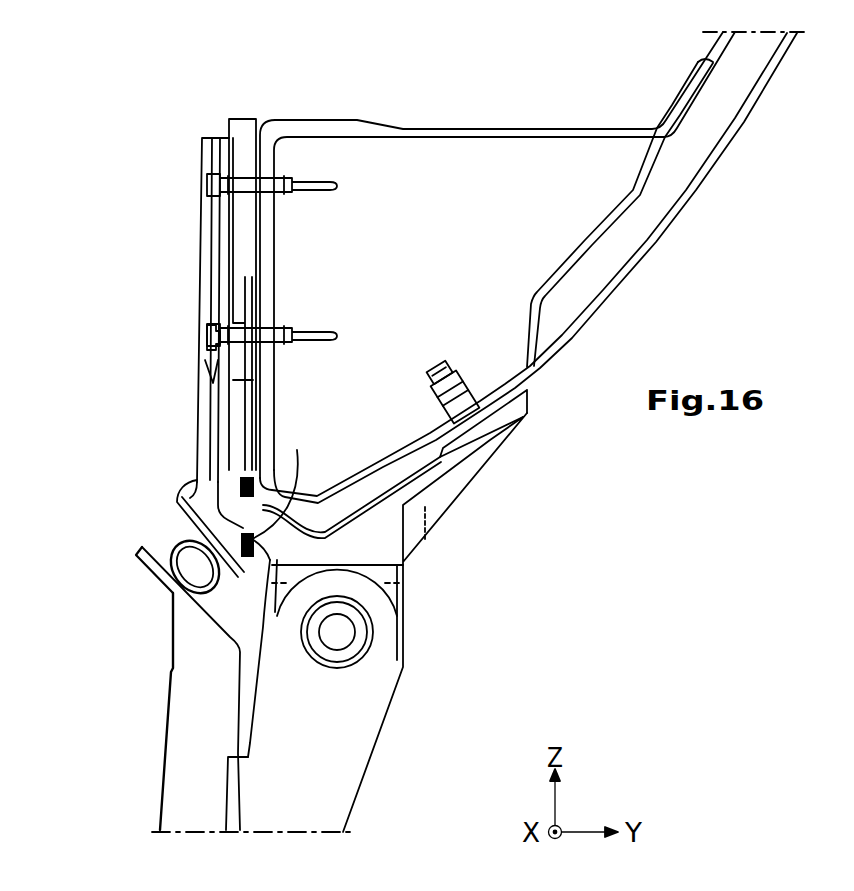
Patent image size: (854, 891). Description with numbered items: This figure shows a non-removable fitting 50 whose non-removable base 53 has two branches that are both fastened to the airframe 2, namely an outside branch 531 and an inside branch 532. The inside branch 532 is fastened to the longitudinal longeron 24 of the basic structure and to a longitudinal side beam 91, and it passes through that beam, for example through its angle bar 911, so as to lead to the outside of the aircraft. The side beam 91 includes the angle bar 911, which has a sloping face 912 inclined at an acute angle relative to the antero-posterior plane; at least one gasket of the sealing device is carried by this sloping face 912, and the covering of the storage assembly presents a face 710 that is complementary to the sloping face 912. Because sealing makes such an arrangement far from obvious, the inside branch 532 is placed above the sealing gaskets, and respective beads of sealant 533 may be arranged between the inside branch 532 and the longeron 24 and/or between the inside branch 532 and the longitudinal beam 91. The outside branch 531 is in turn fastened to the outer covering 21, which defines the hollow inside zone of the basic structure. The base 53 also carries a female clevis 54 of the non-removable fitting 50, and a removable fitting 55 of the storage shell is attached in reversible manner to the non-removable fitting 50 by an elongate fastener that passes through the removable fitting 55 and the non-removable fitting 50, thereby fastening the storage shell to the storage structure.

The airframe 2 is at (700, 207).
The outer covering 21 is at (656, 235).
The longitudinal longeron 24 is at (347, 123).
The side beam 91 is at (247, 130).
The inside branch 532 is at (208, 289).
The bead of sealant 533 is at (262, 490).
The outside branch 531 is at (493, 457).
The non-removable base 53 is at (478, 502).
The non-removable fitting 50 is at (448, 548).
The boss housing 54 is at (405, 595).
The removable fitting 55 is at (372, 793).
The face 710 is at (153, 567).
The sloping face 912 is at (180, 507).
The angle bar 911 is at (177, 491).